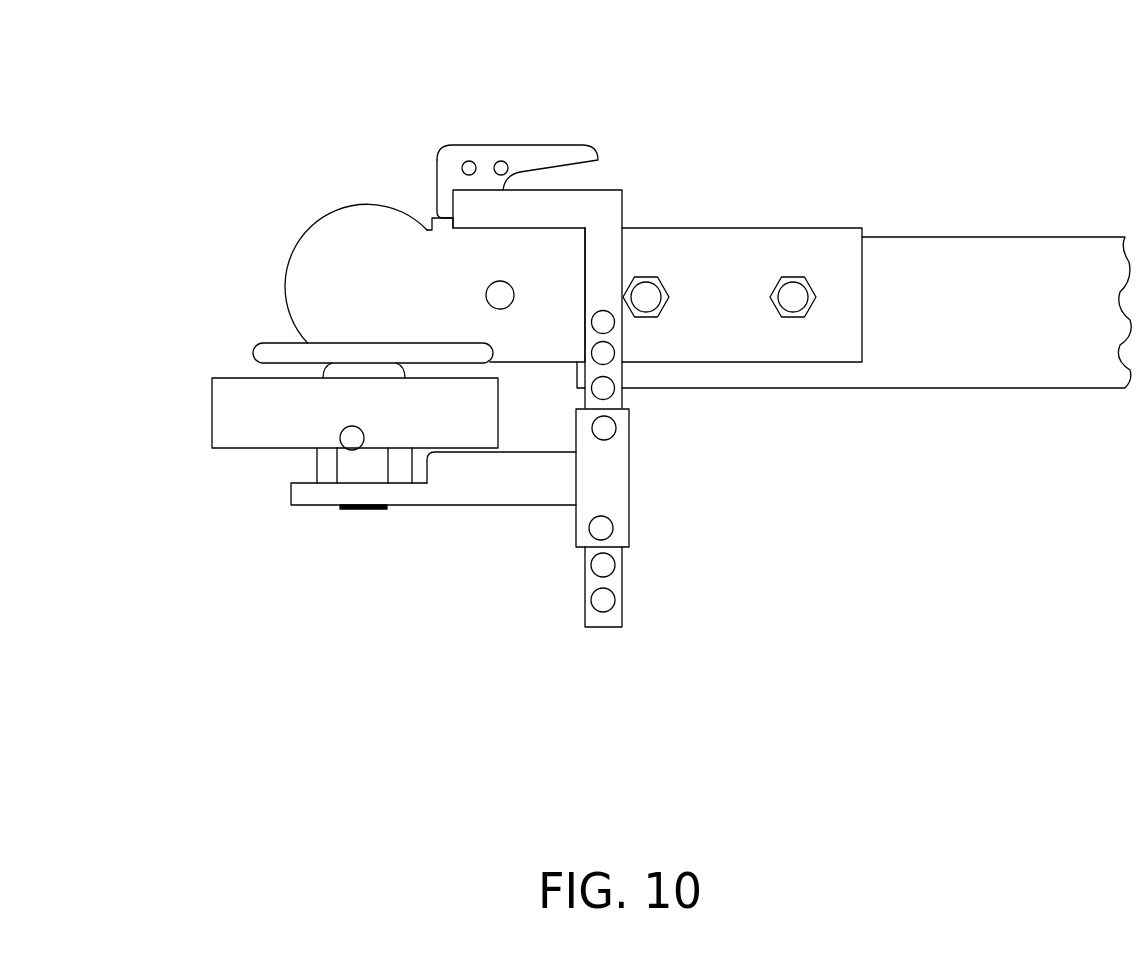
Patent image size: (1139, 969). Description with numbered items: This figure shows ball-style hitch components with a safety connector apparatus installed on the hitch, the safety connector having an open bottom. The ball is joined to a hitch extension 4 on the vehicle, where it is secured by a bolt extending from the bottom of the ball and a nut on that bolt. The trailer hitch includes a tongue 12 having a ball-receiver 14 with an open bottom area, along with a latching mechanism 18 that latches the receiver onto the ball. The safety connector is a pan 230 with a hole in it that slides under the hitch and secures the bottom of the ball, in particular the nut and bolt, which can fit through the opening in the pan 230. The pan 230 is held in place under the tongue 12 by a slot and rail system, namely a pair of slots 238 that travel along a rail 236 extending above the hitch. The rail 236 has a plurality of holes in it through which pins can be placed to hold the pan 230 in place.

The hitch extension 4 is at (235, 428).
The tongue 12 is at (930, 298).
The ball-receiver 14 is at (325, 262).
The latching mechanism 18 is at (535, 155).
The pan 230 is at (498, 493).
The rail 236 is at (602, 217).
The slots 238 is at (612, 479).